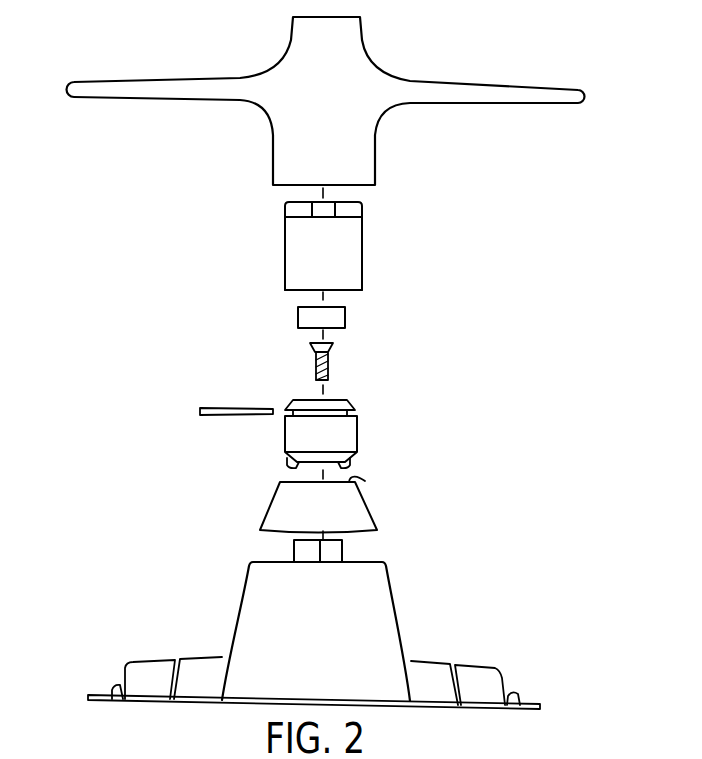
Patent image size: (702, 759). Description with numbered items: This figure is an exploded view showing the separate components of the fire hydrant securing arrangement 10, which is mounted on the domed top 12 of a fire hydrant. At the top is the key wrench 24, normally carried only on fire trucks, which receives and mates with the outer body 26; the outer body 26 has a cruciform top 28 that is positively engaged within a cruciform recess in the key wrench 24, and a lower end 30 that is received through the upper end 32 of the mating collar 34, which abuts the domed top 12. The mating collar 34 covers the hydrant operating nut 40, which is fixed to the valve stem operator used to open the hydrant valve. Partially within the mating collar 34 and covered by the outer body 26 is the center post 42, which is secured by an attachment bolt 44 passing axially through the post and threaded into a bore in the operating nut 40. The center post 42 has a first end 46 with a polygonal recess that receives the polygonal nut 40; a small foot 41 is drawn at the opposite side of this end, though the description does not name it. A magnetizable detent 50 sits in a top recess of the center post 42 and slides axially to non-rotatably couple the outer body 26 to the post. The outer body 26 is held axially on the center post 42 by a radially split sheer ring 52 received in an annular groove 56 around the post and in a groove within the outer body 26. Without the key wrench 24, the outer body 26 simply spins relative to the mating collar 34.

The fire hydrant securing arrangement 10 is at (456, 274).
The domed top 12 is at (400, 621).
The key wrench 24 is at (372, 118).
The outer body 26 is at (362, 255).
The cruciform top 28 is at (362, 210).
The lower end 30 is at (362, 290).
The upper end 32 is at (365, 481).
The mating collar 34 is at (270, 501).
The hydrant operating nut 40 is at (342, 552).
The right foot 41 is at (350, 466).
The center post 42 is at (357, 433).
The attachment bolt 44 is at (328, 367).
The first end 46 is at (289, 465).
The magnetizable detent 50 is at (298, 310).
The sheer ring 52 is at (212, 408).
The annular groove 56 is at (284, 408).